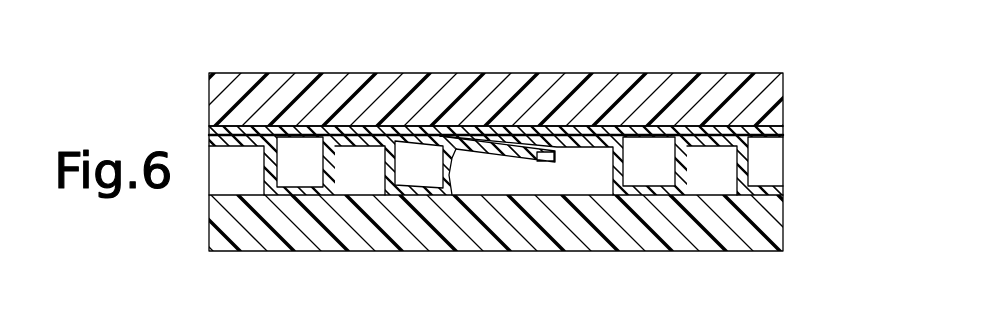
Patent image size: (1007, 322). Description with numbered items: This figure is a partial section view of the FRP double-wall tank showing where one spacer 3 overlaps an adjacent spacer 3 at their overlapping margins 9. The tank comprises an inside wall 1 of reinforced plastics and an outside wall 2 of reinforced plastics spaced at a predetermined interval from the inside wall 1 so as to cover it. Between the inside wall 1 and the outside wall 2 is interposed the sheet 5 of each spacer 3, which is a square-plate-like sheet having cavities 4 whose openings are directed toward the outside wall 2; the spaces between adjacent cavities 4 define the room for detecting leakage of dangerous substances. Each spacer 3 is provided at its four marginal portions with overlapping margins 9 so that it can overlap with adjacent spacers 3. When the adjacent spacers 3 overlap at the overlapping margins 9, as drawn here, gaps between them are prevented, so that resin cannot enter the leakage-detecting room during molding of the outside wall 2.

The inside wall 1 is at (363, 238).
The outside wall 2 is at (327, 80).
The spacer 3 is at (795, 164).
The cavity 4 is at (303, 155).
The sheet 5 is at (336, 158).
The overlapping margin 9 is at (563, 134).